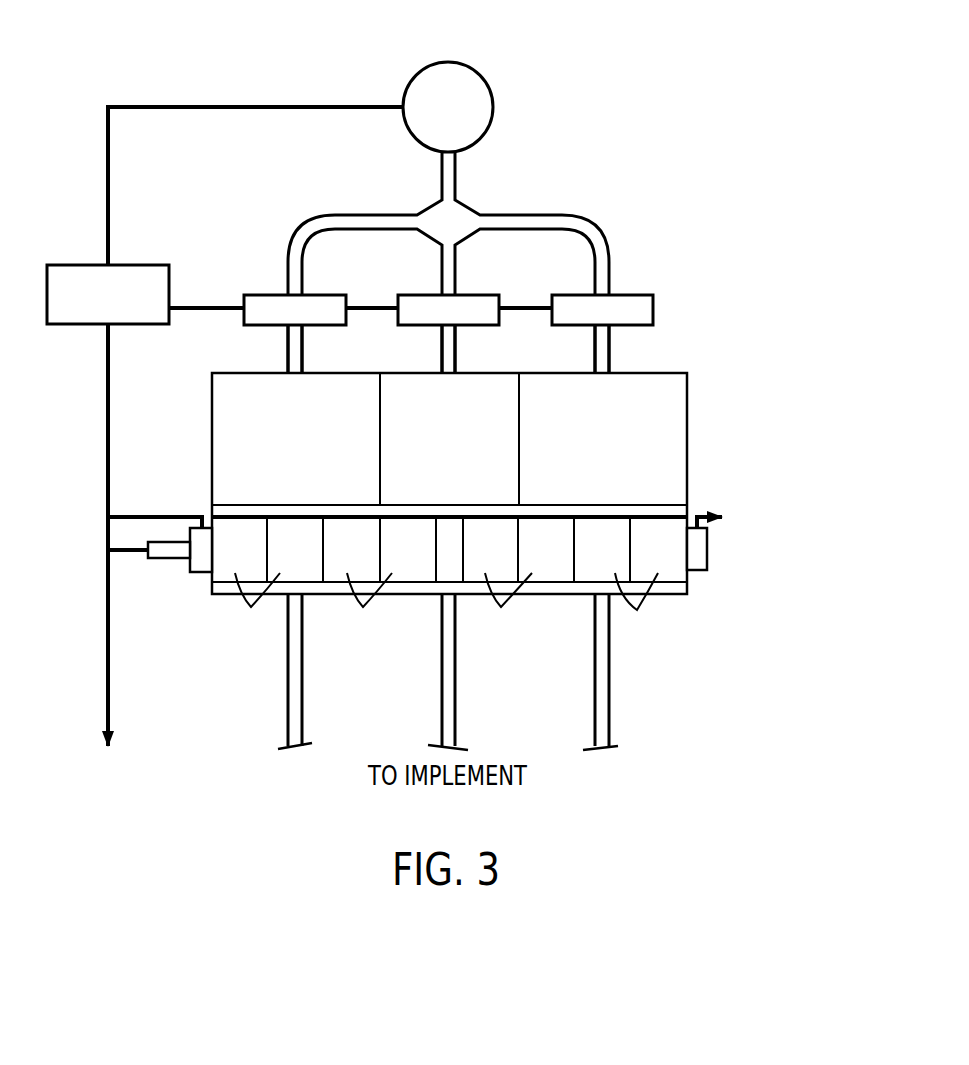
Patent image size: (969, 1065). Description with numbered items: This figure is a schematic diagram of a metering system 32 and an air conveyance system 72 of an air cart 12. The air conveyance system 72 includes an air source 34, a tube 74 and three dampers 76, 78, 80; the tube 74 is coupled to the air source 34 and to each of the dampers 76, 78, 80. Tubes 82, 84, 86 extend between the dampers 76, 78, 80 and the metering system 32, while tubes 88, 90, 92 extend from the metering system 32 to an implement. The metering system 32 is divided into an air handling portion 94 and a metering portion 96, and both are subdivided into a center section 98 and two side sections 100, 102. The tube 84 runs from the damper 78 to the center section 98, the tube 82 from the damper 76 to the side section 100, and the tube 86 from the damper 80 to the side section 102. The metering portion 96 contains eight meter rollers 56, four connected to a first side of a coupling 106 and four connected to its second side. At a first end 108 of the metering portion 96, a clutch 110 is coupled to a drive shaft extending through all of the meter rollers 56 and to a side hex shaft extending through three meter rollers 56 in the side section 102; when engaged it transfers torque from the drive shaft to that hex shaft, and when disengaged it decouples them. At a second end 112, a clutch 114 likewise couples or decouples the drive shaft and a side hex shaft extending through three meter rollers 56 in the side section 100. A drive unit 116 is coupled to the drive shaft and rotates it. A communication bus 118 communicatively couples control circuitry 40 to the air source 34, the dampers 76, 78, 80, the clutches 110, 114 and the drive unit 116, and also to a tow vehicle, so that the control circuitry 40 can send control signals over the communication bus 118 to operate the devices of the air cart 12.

The air cart 12 is at (214, 30).
The metering system 32 is at (752, 382).
The air source 34 is at (478, 72).
The control circuitry 40 is at (152, 265).
The meter rollers 56 is at (446, 613).
The air conveyance system 72 is at (645, 166).
The tube 74 is at (520, 215).
The damper 76 is at (322, 295).
The damper 78 is at (474, 295).
The damper 80 is at (630, 295).
The tube 82 is at (288, 349).
The tube 84 is at (442, 349).
The tube 86 is at (595, 349).
The tube 88 is at (288, 672).
The tube 90 is at (442, 672).
The tube 92 is at (595, 672).
The air handling portion 94 is at (688, 437).
The metering portion 96 is at (685, 594).
The center section 98 is at (504, 385).
The side section 100 is at (222, 412).
The side section 102 is at (657, 382).
The coupling 106 is at (440, 565).
The first end 108 is at (689, 517).
The clutch 110 is at (695, 572).
The second end 112 is at (202, 522).
The clutch 114 is at (199, 573).
The drive unit 116 is at (170, 559).
The communication bus 118 is at (258, 107).